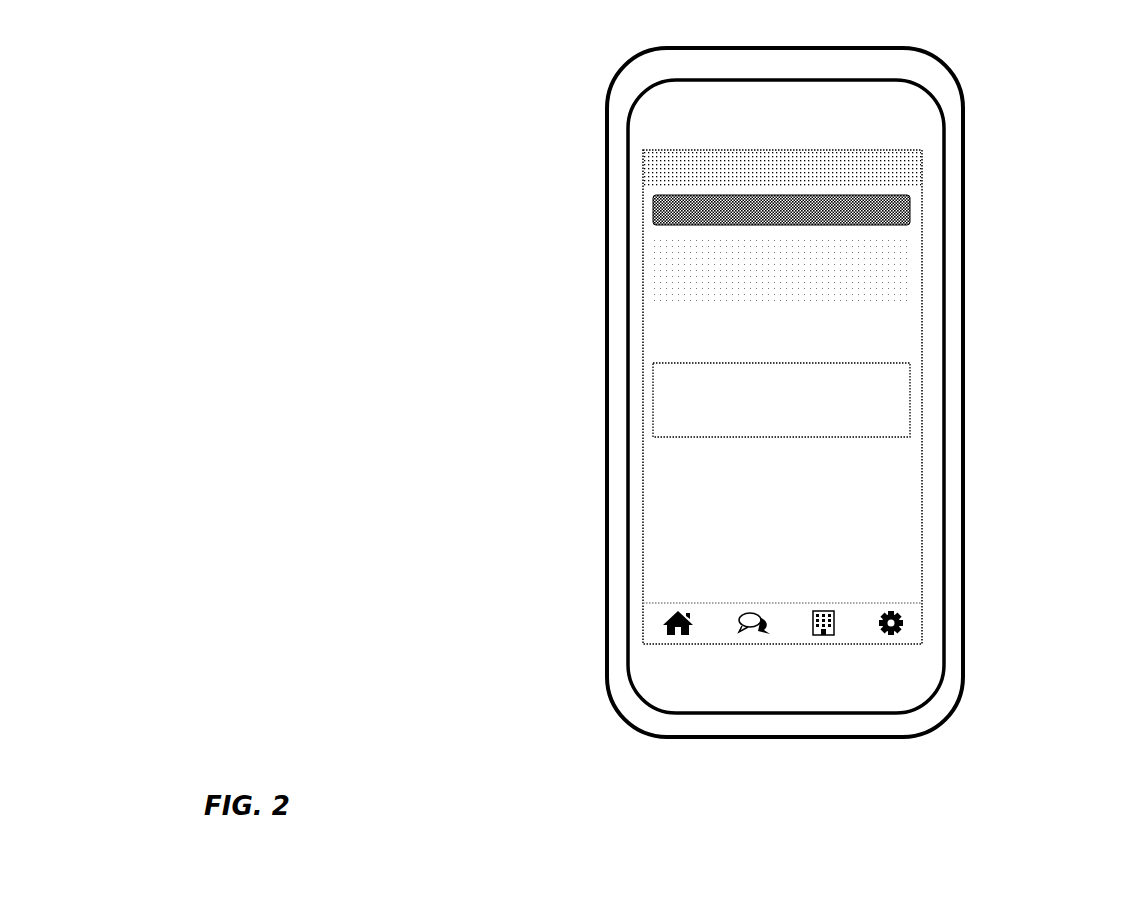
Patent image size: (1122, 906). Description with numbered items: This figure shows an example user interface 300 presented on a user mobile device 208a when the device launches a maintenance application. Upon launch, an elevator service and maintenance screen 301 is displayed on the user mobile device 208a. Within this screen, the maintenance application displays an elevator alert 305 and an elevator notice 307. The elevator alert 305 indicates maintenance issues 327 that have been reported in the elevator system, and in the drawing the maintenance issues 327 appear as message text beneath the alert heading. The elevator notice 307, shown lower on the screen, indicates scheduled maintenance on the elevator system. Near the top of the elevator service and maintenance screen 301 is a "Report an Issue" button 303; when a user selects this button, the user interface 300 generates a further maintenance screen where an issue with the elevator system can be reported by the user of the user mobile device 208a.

The user mobile device 208a is at (915, 45).
The user interface 300 is at (642, 228).
The elevator service and maintenance screen 301 is at (900, 152).
The "Report an Issue" button 303 is at (900, 206).
The elevator alert 305 is at (848, 255).
The maintenance issues 327 is at (652, 277).
The elevator notice 307 is at (892, 387).